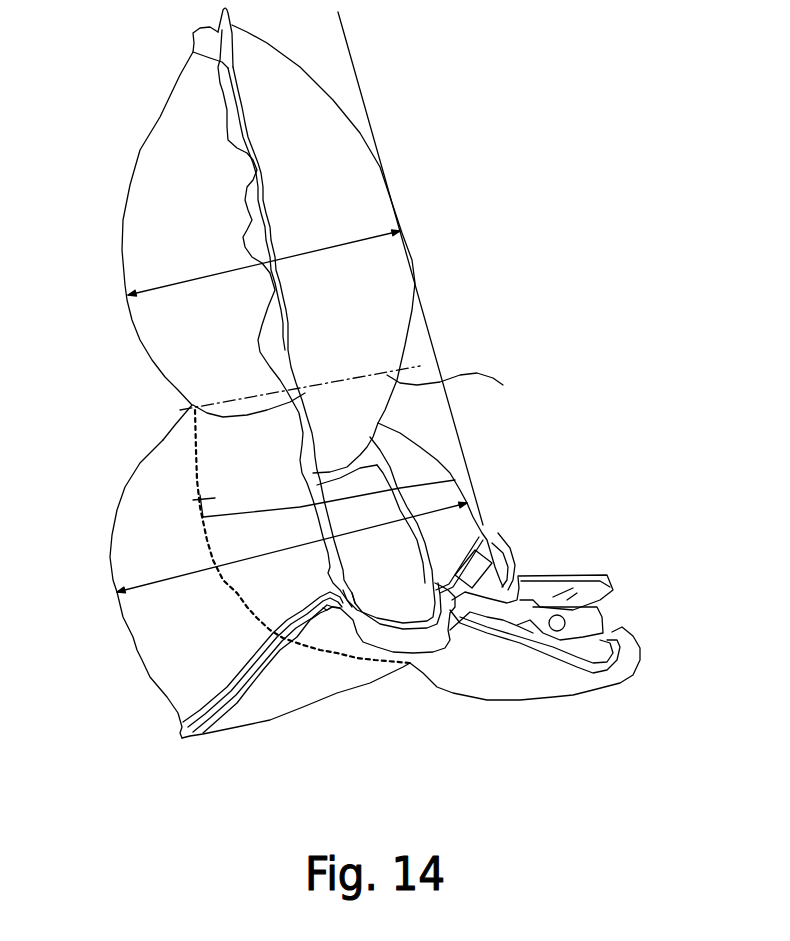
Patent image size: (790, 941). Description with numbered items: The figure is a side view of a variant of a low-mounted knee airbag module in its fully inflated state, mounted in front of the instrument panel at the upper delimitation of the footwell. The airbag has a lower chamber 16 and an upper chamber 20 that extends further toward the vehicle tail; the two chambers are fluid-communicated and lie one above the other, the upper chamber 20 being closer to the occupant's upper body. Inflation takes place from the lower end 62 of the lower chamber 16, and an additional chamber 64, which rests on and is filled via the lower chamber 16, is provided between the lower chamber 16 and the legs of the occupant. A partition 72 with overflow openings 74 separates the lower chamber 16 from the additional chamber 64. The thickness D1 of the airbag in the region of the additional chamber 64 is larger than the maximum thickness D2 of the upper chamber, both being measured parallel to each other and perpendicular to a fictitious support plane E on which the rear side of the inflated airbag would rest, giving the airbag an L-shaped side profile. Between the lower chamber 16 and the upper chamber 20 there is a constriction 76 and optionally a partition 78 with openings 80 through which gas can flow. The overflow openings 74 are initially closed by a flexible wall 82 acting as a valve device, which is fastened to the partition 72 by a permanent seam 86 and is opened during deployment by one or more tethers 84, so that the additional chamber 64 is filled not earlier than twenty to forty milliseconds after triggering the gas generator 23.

The lower chamber 16 is at (280, 522).
The upper chamber 20 is at (213, 290).
The gas generator 23 is at (565, 623).
The lower end 62 is at (478, 553).
The additional chamber 64 is at (170, 657).
The partition 72 is at (373, 660).
The overflow openings 74 is at (247, 608).
The constriction 76 is at (188, 409).
The partition 78 is at (227, 400).
The openings 80 is at (460, 392).
The flexible wall 82 is at (193, 505).
The tethers 84 is at (430, 483).
The permanent seam 86 is at (200, 497).
The thickness D1 is at (143, 585).
The maximum thickness D2 is at (175, 283).
The fictitious support plane E is at (438, 360).